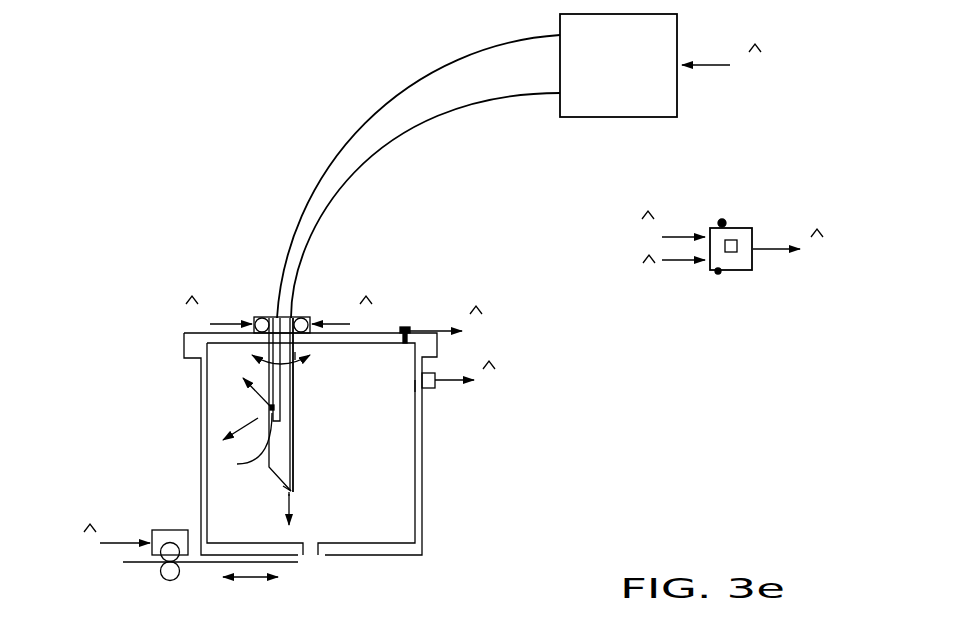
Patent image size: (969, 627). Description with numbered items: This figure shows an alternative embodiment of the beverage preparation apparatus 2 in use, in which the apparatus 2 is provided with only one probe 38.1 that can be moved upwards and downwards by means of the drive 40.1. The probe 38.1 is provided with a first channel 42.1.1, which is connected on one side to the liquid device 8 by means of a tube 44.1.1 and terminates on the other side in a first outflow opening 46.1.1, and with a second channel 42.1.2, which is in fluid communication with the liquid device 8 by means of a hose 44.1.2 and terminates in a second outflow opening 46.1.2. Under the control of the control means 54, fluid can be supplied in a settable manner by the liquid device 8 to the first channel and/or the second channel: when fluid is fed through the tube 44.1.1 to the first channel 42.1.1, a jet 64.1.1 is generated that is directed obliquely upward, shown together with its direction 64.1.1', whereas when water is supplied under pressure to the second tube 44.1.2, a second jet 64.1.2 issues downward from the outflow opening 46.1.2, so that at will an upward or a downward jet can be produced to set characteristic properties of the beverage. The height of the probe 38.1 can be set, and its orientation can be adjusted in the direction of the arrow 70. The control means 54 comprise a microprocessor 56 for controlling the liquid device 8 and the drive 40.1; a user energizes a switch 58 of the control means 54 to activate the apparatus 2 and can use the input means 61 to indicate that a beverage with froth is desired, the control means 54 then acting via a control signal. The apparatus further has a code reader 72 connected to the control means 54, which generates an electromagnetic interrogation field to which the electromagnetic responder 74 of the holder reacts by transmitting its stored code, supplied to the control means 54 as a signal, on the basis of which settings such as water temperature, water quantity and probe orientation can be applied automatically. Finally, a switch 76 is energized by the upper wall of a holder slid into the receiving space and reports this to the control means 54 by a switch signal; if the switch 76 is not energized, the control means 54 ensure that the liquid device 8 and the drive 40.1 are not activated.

The apparatus 2 is at (578, 319).
The liquid device 8 is at (595, 97).
The first drive 40.1 is at (258, 316).
The tube 44.1.1 is at (374, 116).
The hose 44.1.2 is at (430, 122).
The first channel 42.1.1 is at (268, 370).
The second channel 42.1.2 is at (291, 396).
The first probe 38.1 is at (294, 428).
The jet 64.1.1 is at (157, 401).
The second jet 64.1.1' is at (149, 436).
The first outflow opening 46.1.1 is at (237, 464).
The second outflow opening 46.1.2 is at (283, 488).
The second jet 64.1.2 is at (291, 492).
The arrow 70 is at (295, 356).
The switch 76 is at (407, 327).
The code reader 72 is at (435, 388).
The electromagnetic responder 74 is at (415, 385).
The control means 54 is at (735, 260).
The microprocessor 56 is at (735, 240).
The switch 58 is at (724, 220).
The input means 61 is at (718, 272).